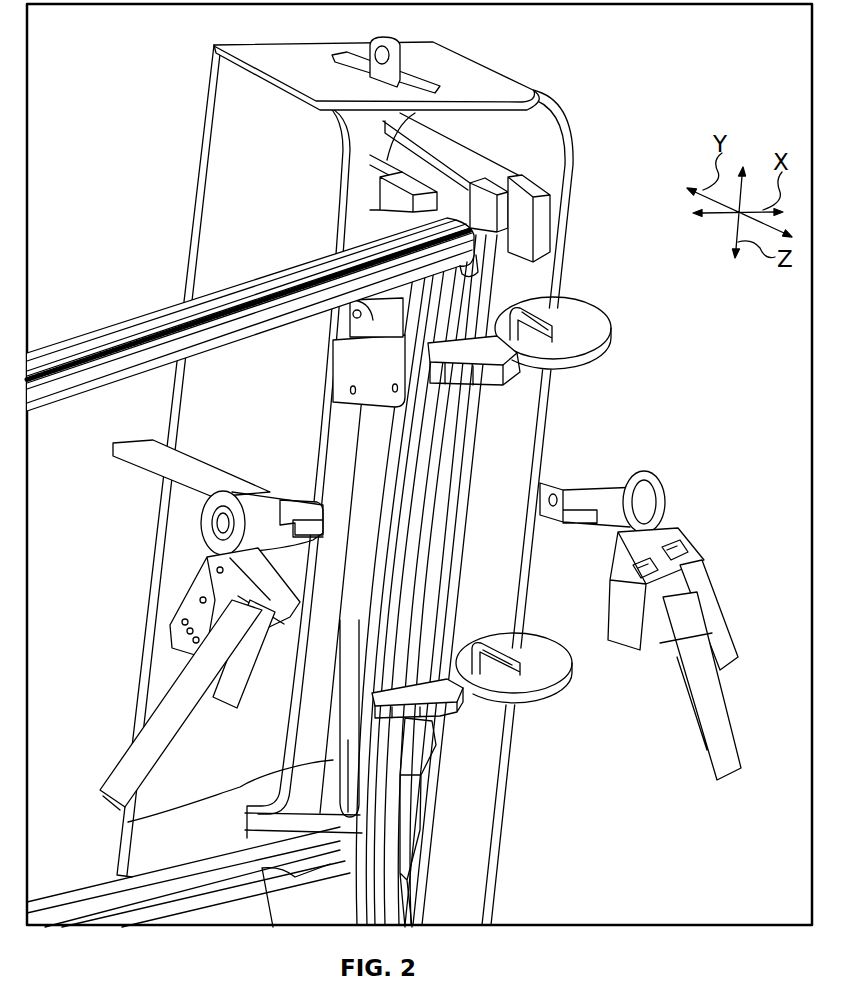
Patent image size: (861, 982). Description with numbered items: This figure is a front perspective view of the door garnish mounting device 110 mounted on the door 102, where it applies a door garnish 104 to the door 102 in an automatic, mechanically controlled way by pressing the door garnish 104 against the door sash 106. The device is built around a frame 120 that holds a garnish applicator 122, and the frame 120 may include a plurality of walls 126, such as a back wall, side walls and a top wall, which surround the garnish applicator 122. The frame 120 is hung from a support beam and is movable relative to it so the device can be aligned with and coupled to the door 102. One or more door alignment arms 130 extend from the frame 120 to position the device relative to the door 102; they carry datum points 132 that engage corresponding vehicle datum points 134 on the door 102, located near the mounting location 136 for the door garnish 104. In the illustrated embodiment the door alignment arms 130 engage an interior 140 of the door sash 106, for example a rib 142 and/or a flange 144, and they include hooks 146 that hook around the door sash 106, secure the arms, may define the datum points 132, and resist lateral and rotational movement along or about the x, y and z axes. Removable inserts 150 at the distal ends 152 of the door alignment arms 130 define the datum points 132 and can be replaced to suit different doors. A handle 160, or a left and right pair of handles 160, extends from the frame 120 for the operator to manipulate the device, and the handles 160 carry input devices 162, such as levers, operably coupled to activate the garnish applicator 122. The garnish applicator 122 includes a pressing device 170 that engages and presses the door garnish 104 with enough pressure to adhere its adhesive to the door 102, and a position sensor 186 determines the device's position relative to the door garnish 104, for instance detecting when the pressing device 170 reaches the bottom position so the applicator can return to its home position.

The door 102 is at (193, 858).
The door garnish 104 is at (130, 822).
The door sash 106 is at (427, 733).
The door garnish mounting device 110 is at (185, 93).
The frame 120 is at (473, 82).
The garnish applicator 122 is at (453, 349).
The walls 126 is at (247, 137).
The door alignment arms 130 is at (523, 190).
The datum points 132 is at (460, 226).
The vehicle datum points 134 is at (396, 688).
The mounting location 136 is at (352, 660).
The interior of the door sash 140 is at (433, 592).
The rib 142 is at (430, 443).
The flange 144 is at (450, 464).
The hooks 146 is at (385, 340).
The removable inserts 150 is at (523, 220).
The distal ends 152 is at (543, 243).
The handle 160 is at (120, 770).
The input devices 162 is at (205, 672).
The pressing device 170 is at (262, 277).
The position sensor 186 is at (535, 91).